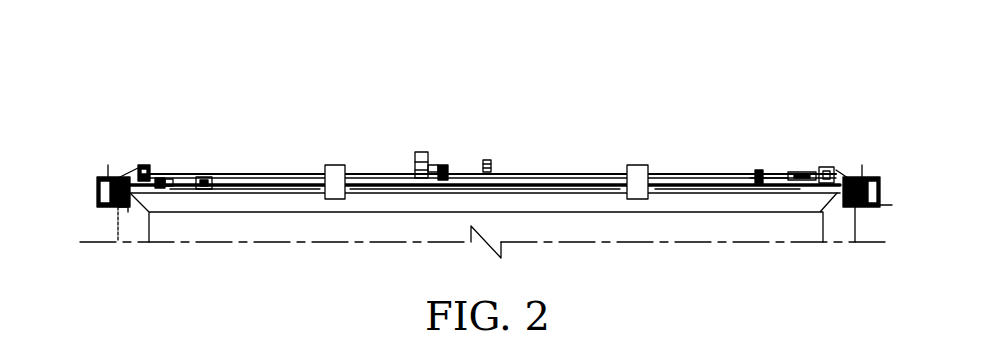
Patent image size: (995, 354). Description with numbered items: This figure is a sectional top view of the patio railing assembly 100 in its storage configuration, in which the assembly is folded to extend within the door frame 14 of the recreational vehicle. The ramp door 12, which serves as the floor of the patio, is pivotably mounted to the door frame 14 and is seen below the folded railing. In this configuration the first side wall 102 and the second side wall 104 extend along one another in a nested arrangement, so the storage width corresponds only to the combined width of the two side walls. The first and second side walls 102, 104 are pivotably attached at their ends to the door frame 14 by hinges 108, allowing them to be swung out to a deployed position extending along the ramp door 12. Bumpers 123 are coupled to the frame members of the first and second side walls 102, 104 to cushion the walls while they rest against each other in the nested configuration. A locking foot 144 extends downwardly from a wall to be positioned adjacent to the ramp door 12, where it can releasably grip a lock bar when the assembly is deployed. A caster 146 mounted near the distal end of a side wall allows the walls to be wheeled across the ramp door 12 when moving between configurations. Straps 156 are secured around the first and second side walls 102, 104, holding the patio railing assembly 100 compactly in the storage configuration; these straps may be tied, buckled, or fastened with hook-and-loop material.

The patio railing assembly 100 is at (688, 88).
The ramp door 12 is at (731, 234).
The door frame 14 is at (97, 192).
The first side wall 102 is at (293, 175).
The second side wall 104 is at (611, 196).
The hinges 108 is at (141, 164).
The bumpers 123 is at (183, 178).
The locking foot 144 is at (418, 152).
The caster 146 is at (445, 168).
The straps 156 is at (335, 166).